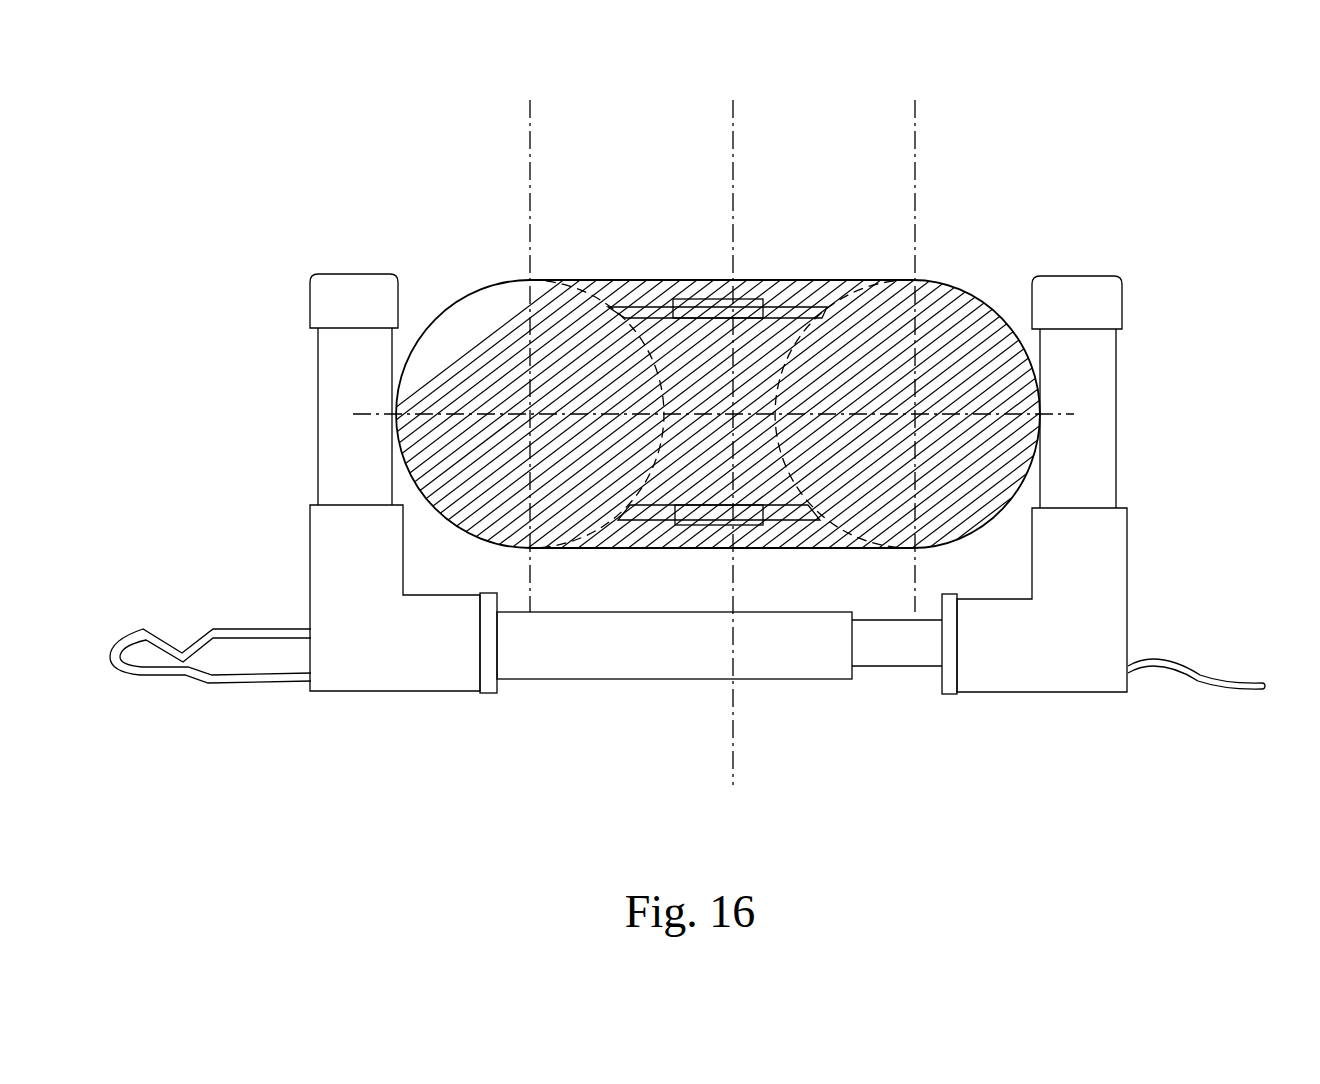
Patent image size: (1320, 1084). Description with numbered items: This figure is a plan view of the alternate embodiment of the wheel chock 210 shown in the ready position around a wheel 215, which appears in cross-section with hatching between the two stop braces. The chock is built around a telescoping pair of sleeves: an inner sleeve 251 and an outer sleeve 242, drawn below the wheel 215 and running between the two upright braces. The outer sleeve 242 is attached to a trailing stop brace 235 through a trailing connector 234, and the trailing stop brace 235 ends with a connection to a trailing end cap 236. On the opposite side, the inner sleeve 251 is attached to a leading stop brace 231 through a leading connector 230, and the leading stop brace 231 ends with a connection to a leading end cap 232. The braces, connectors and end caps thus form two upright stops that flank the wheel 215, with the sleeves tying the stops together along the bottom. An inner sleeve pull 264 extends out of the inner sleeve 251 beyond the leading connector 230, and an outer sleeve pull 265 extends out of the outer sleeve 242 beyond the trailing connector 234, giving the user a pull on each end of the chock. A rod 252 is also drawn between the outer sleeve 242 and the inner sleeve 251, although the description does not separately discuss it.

The wheel chock 210 is at (912, 773).
The wheel 215 is at (958, 310).
The leading connector 230 is at (1090, 693).
The leading stop brace 231 is at (1117, 392).
The leading end cap 232 is at (1122, 292).
The trailing connector 234 is at (308, 580).
The trailing stop brace 235 is at (318, 448).
The trailing end cap 236 is at (308, 303).
The outer sleeve 242 is at (610, 680).
The inner sleeve 251 is at (951, 696).
The rod 252 is at (922, 668).
The inner sleeve pull 264 is at (1167, 668).
The outer sleeve pull 265 is at (215, 630).